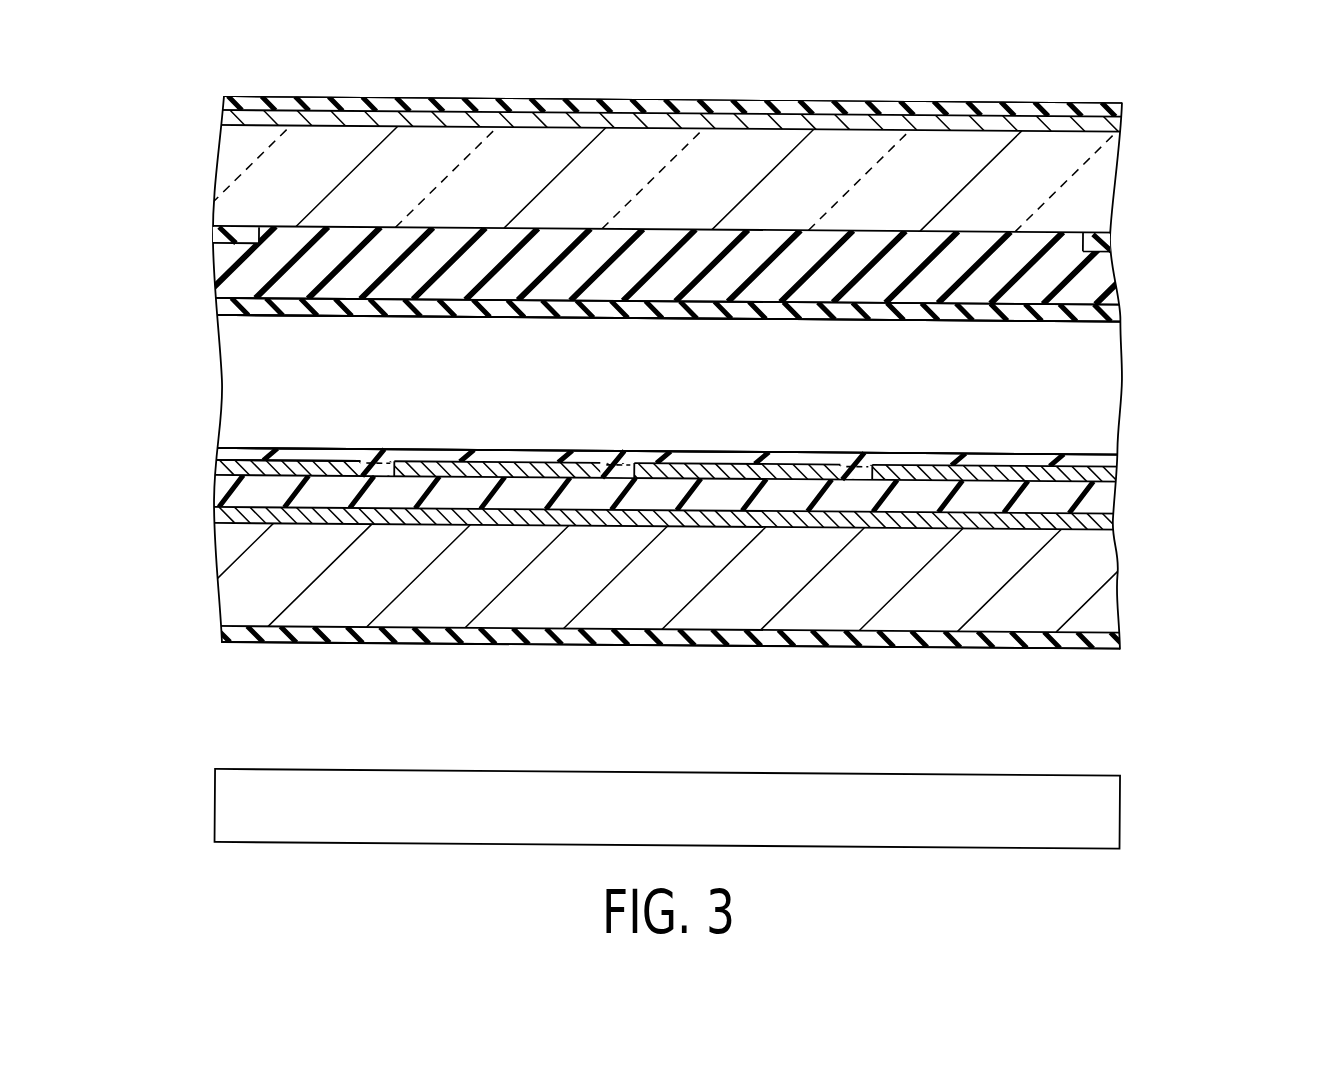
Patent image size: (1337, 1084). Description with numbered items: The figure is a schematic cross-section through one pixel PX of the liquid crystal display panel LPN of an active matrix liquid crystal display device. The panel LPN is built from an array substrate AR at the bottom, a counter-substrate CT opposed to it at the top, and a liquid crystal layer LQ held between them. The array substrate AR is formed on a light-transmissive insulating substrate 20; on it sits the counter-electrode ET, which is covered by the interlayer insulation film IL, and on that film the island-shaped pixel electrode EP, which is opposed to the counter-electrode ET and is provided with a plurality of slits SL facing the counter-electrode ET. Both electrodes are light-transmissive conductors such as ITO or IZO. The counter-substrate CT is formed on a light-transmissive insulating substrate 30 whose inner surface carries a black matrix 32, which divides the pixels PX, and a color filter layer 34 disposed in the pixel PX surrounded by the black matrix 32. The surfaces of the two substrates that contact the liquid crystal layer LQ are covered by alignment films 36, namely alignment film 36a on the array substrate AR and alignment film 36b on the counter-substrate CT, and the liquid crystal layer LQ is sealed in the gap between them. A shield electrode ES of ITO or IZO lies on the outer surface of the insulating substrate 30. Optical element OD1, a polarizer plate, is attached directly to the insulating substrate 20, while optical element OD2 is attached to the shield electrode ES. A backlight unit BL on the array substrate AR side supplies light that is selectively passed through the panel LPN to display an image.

The liquid crystal display panel LPN is at (1215, 103).
The counter-substrate CT is at (1132, 122).
The array substrate AR is at (1128, 455).
The liquid crystal layer LQ is at (1100, 387).
The backlight unit BL is at (1098, 812).
The pixel PX is at (222, 647).
The optical element OD1 is at (222, 628).
The optical element OD2 is at (225, 105).
The shield electrode ES is at (225, 118).
The insulating substrate 30 is at (233, 153).
The black matrix 32 is at (222, 235).
The color filter layer 34 is at (222, 262).
The alignment films 36 is at (102, 315).
The alignment film 36a is at (222, 456).
The alignment film 36b is at (222, 306).
The pixel electrode EP is at (227, 455).
The slit SL is at (388, 456).
The interlayer insulation film IL is at (222, 488).
The counter-electrode ET is at (222, 515).
The insulating substrate 20 is at (232, 588).